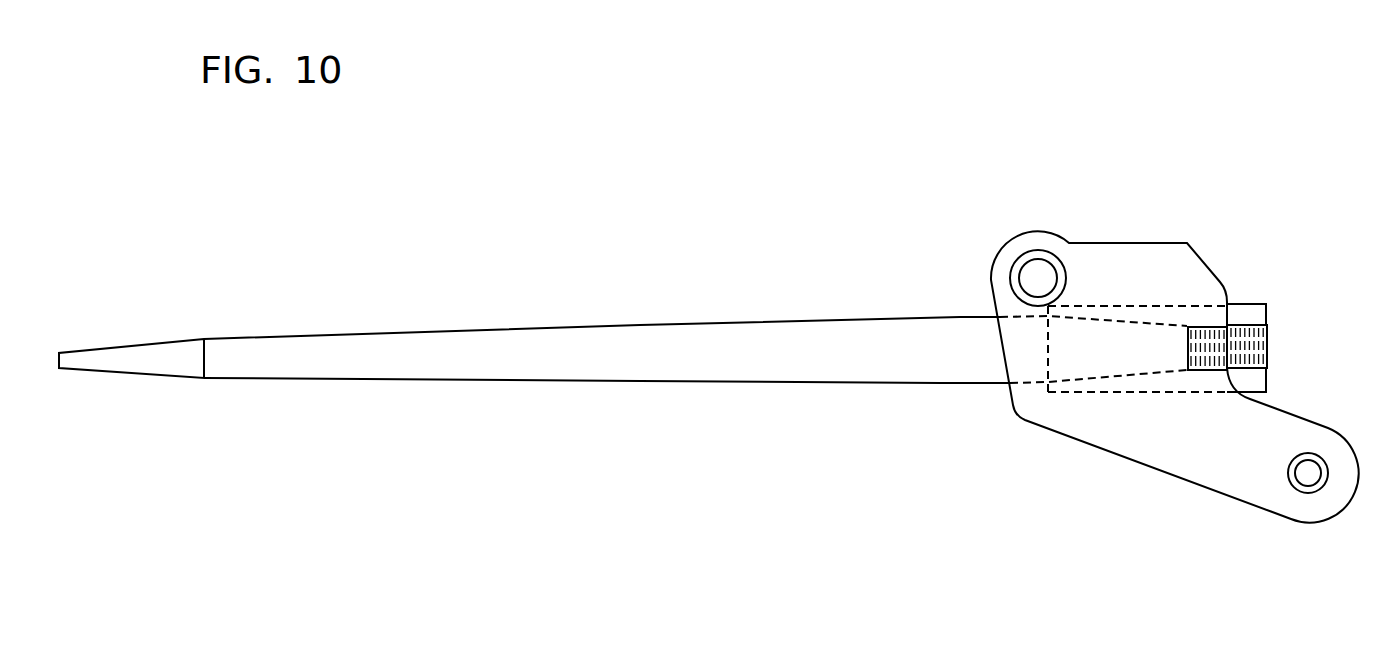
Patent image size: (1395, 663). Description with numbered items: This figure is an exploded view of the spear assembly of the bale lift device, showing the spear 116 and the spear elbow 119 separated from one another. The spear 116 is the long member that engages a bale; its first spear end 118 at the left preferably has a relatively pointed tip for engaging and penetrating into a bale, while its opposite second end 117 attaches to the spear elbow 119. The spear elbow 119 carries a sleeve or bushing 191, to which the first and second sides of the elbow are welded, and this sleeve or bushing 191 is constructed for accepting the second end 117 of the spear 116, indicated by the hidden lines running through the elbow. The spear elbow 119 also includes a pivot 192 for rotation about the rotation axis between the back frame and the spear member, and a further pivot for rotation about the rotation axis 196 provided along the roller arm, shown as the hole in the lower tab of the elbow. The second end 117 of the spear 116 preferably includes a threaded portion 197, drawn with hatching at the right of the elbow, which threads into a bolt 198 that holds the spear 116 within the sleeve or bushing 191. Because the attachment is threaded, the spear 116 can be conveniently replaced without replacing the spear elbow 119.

The spear 116 is at (508, 347).
The second end 117 is at (1093, 362).
The first spear end 118 is at (164, 358).
The spear elbow 119 is at (1120, 262).
The sleeve or bushing 191 is at (1147, 387).
The pivot 192 is at (1028, 262).
The rotation axis 196 is at (1318, 490).
The threaded portion 197 is at (1243, 333).
The bolt 198 is at (1253, 385).